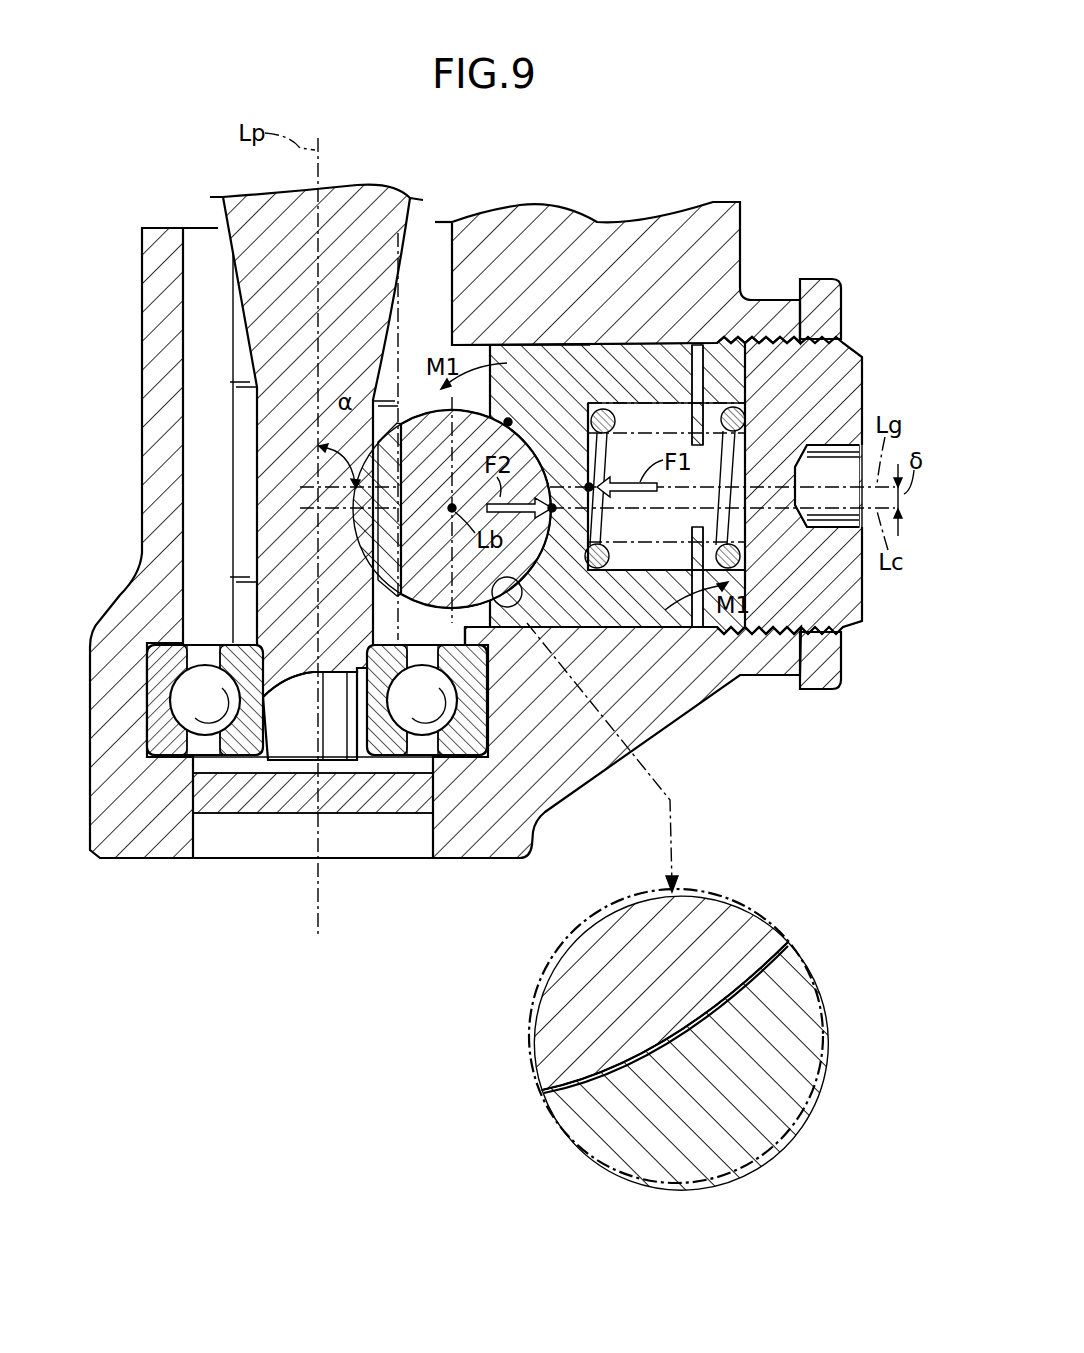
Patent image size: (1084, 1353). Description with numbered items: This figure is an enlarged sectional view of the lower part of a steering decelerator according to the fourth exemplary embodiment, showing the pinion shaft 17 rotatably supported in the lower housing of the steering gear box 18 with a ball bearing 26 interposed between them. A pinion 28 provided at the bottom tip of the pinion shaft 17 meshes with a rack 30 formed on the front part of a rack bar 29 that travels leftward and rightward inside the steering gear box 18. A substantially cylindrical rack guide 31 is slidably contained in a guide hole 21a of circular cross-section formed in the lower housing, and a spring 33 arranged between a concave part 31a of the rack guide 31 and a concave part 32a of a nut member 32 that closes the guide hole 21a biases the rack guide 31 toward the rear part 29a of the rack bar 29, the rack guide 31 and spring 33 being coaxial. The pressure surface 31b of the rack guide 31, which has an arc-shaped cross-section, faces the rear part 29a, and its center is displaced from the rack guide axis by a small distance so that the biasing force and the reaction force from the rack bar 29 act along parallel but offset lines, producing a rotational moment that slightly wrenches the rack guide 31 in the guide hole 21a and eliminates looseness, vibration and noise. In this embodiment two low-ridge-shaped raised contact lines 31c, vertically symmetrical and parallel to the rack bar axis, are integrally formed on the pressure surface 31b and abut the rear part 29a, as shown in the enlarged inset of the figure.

The pinion shaft 17 is at (373, 186).
The steering gear box 18 is at (125, 478).
The guide hole 21a is at (570, 352).
The ball bearing 26 is at (208, 673).
The pinion 28 is at (241, 462).
The rack bar 29 is at (432, 402).
The rear part of the rack bar 29a is at (530, 426).
The rack 30 is at (388, 532).
The rack guide 31 is at (658, 632).
The concave part of the rack guide 31a is at (650, 408).
The pressure surface 31b is at (720, 1007).
The raised contact lines 31c is at (505, 424).
The nut member 32 is at (856, 344).
The concave part of the nut member 32a is at (750, 414).
The spring 33 is at (603, 556).